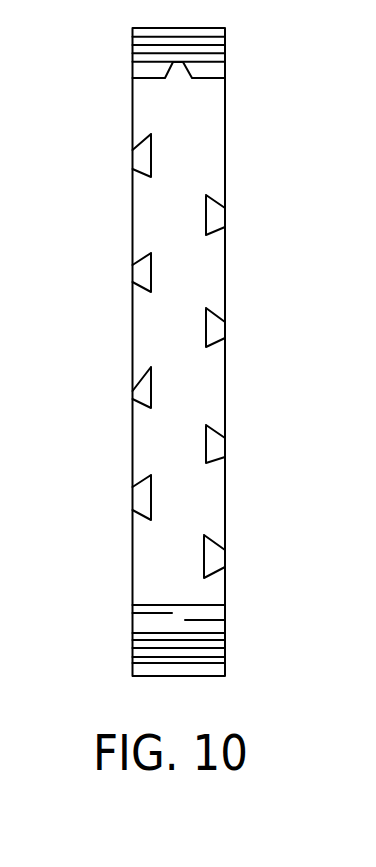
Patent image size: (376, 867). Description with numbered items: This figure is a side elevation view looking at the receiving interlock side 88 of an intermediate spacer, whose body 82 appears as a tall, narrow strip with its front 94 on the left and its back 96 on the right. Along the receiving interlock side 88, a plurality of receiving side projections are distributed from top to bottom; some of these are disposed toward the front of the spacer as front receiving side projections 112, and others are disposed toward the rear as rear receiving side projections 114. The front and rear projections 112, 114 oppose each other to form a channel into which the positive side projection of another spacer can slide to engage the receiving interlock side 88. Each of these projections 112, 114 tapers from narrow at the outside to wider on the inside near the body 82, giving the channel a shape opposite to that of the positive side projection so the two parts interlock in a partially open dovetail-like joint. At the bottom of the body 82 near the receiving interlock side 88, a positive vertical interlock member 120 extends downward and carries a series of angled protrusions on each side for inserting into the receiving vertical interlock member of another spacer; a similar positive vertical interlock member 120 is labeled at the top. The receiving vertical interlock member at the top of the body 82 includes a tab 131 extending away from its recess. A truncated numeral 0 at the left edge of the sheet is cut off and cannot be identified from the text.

The body 82 is at (203, 122).
The positive vertical interlock member 120 is at (225, 43).
The tab 131 is at (176, 70).
The front receiving side projections 112 is at (132, 392).
The rear receiving side projections 114 is at (223, 438).
The front 94 is at (100, 161).
The back 96 is at (248, 177).
The receiving interlock side 88 is at (25, 253).
The truncated reference numeral 0 is at (9, 425).